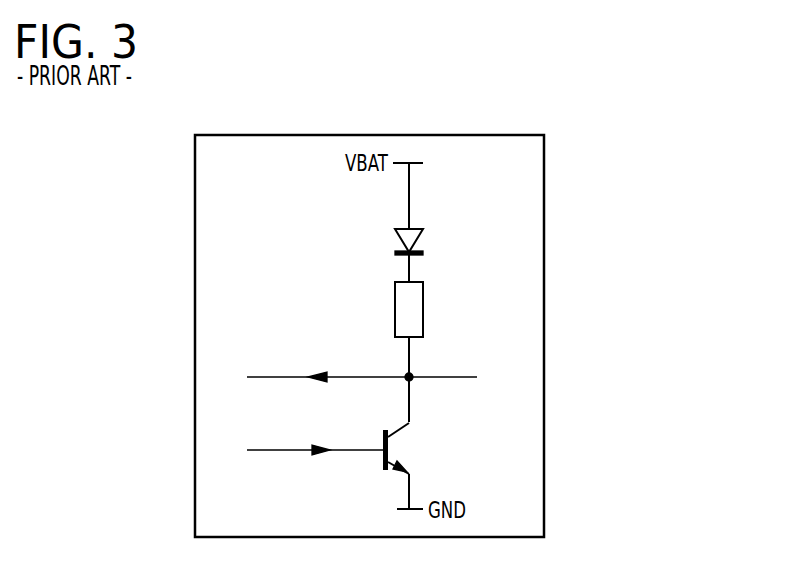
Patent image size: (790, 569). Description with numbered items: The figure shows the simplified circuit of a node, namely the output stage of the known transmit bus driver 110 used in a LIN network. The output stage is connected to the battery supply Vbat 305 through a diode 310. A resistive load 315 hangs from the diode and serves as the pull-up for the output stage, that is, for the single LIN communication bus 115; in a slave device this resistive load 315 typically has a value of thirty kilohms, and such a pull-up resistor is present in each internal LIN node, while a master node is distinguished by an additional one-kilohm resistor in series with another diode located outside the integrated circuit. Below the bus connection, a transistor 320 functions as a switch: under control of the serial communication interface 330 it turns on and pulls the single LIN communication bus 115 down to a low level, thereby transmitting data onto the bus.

The Tx bus driver 110 is at (609, 188).
The Vbat 305 is at (409, 190).
The diode 310 is at (395, 235).
The resistive load 315 is at (423, 297).
The single LIN communication bus 115 is at (452, 378).
The transistor 320 is at (396, 446).
The serial communication interface (SCI) 330 is at (283, 451).